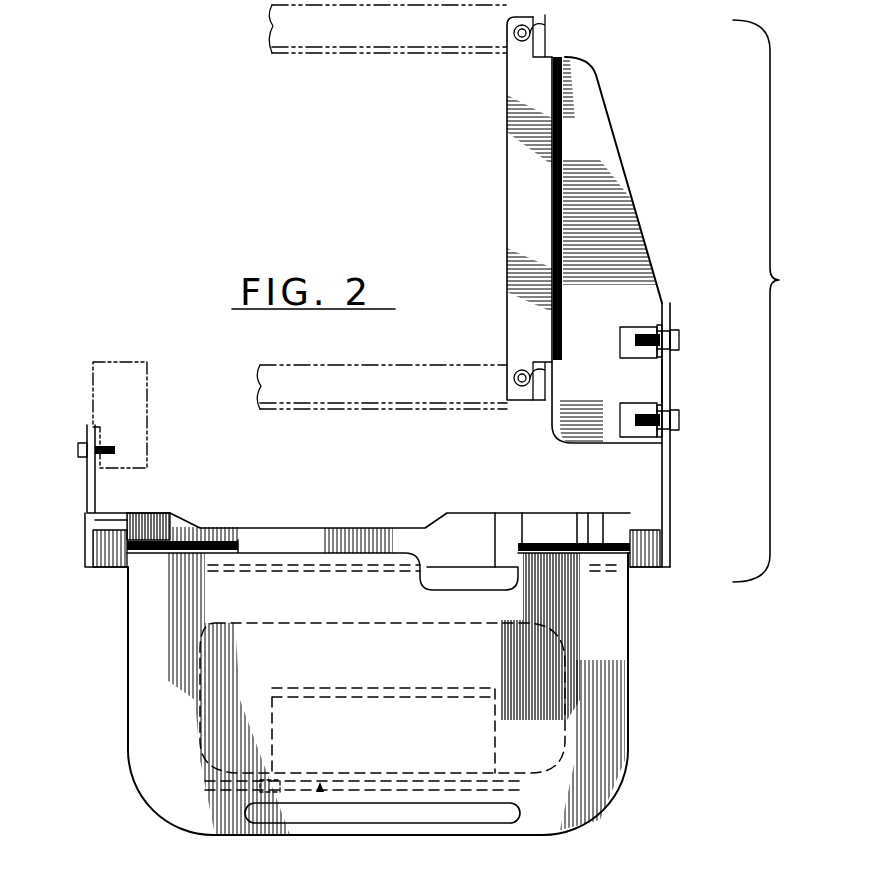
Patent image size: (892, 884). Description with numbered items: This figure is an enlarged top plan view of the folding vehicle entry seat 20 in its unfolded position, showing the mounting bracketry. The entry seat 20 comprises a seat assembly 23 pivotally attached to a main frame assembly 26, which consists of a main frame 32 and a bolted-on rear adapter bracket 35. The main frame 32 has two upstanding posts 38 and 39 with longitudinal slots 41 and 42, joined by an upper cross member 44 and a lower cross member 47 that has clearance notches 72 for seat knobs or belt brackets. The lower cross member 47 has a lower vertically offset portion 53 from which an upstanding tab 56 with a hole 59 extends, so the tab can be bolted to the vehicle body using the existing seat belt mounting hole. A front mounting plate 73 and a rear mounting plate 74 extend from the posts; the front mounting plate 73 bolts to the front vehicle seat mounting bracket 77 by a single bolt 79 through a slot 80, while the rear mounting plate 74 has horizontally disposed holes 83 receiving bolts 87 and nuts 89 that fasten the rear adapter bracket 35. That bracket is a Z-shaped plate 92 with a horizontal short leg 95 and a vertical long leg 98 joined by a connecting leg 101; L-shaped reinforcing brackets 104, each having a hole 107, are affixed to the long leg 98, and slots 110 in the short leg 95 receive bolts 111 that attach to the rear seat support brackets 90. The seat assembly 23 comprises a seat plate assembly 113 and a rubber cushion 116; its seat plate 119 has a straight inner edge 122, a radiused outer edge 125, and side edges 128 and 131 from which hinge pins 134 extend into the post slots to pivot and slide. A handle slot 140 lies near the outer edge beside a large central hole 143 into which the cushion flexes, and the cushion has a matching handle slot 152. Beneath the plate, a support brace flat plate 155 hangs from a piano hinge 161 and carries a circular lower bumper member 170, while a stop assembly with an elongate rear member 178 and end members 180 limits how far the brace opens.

The entry seat 20 is at (183, 342).
The seat assembly 23 is at (630, 683).
The main frame assembly 26 is at (773, 301).
The main frame 32 is at (690, 527).
The rear adapter bracket 35 is at (652, 211).
The post 38 is at (93, 562).
The post 39 is at (653, 545).
The longitudinal slot 41 is at (130, 540).
The longitudinal slot 42 is at (623, 537).
The upper cross member 44 is at (125, 570).
The lower cross member 47 is at (465, 513).
The lower vertically offset portion 53 is at (576, 514).
The upstanding tab 56 is at (520, 598).
The hole 59 is at (568, 582).
The clearance notch 72 is at (297, 527).
The front mounting plate 73 is at (85, 497).
The rear mounting plate 74 is at (670, 494).
The front vehicle seat mounting bracket 77 is at (148, 400).
The bolt 79 is at (79, 457).
The slot 80 is at (86, 447).
The holes 83 is at (665, 407).
The bolts 87 is at (680, 340).
The nuts 89 is at (622, 333).
The rear seat support bracket 90 is at (400, 56).
The Z-shaped plate 92 is at (652, 259).
The short leg 95 is at (507, 150).
The long leg 98 is at (618, 150).
The connecting leg 101 is at (566, 275).
The L-shaped reinforcing bracket 104 is at (635, 405).
The hole 107 is at (665, 330).
The slots 110 is at (545, 15).
The bolts 111 is at (545, 33).
The seat plate assembly 113 is at (162, 817).
The rubber cushion 116 is at (146, 723).
The seat plate 119 is at (207, 830).
The straight inner edge 122 is at (403, 551).
The radiused outer edge 125 is at (375, 834).
The side edge 128 is at (128, 688).
The side edge 131 is at (630, 630).
The hinge pins 134 is at (205, 545).
The handle slot 140 is at (477, 818).
The central hole 143 is at (193, 660).
The handle slot 152 is at (435, 834).
The flat plate 155 is at (357, 690).
The piano hinge 161 is at (313, 812).
The lower bumper member 170 is at (402, 687).
The elongate rear member 178 is at (507, 813).
The end members 180 is at (217, 775).